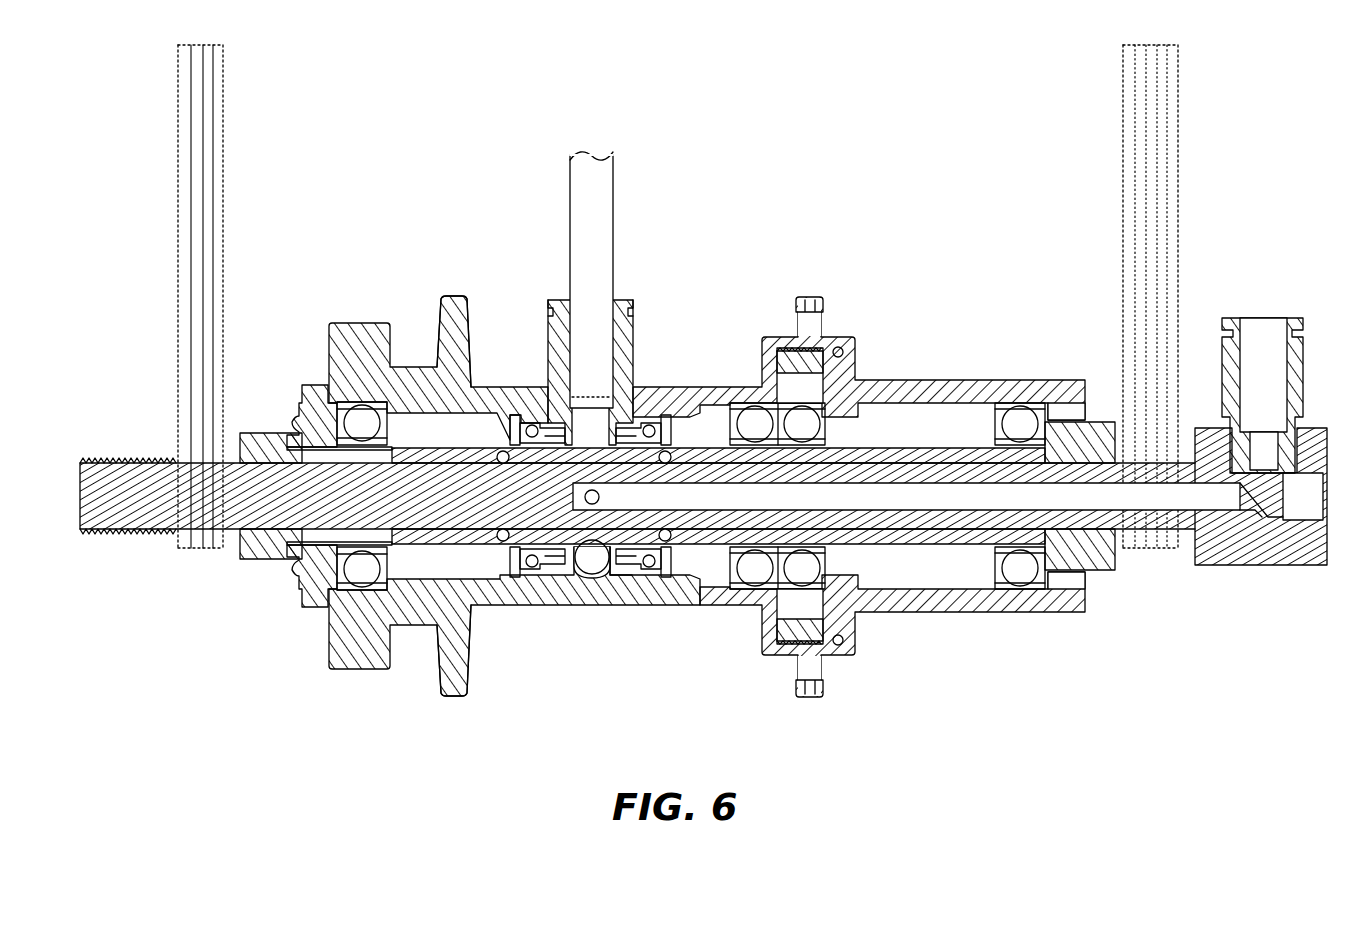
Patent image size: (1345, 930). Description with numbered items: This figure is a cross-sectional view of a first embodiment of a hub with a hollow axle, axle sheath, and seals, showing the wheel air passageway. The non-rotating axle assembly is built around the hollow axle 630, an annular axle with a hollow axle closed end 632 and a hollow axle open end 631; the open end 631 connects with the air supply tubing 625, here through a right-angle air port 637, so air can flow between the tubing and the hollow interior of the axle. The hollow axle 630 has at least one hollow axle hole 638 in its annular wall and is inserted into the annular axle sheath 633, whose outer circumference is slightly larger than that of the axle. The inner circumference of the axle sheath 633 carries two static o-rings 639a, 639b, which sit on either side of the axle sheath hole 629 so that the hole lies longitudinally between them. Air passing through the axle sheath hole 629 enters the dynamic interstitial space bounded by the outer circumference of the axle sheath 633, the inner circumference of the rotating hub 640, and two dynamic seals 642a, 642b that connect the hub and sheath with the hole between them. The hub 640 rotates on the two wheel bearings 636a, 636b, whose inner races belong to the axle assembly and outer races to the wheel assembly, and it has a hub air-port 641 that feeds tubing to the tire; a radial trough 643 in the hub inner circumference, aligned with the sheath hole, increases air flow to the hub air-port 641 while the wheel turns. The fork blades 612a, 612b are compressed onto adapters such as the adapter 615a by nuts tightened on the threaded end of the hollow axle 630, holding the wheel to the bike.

The fork blade 612a is at (178, 178).
The fork blade 612b is at (1135, 180).
The adapter 615a is at (258, 432).
The air supply tubing 625 is at (613, 208).
The axle sheath hole 629 is at (595, 548).
The hollow axle 630 is at (238, 524).
The hollow axle open end 631 is at (1212, 497).
The hollow axle closed end 632 is at (112, 490).
The axle sheath 633 is at (966, 445).
The wheel bearing 636a is at (350, 425).
The wheel bearing 636b is at (762, 378).
The right-angle air port 637 is at (1245, 338).
The hollow axle hole 638 is at (625, 565).
The static o-ring 639a is at (512, 415).
The static o-ring 639b is at (668, 415).
The hub 640 is at (445, 298).
The hub air-port 641 is at (636, 405).
The dynamic seal 642a is at (533, 420).
The dynamic seal 642b is at (650, 420).
The radial trough 643 is at (579, 548).